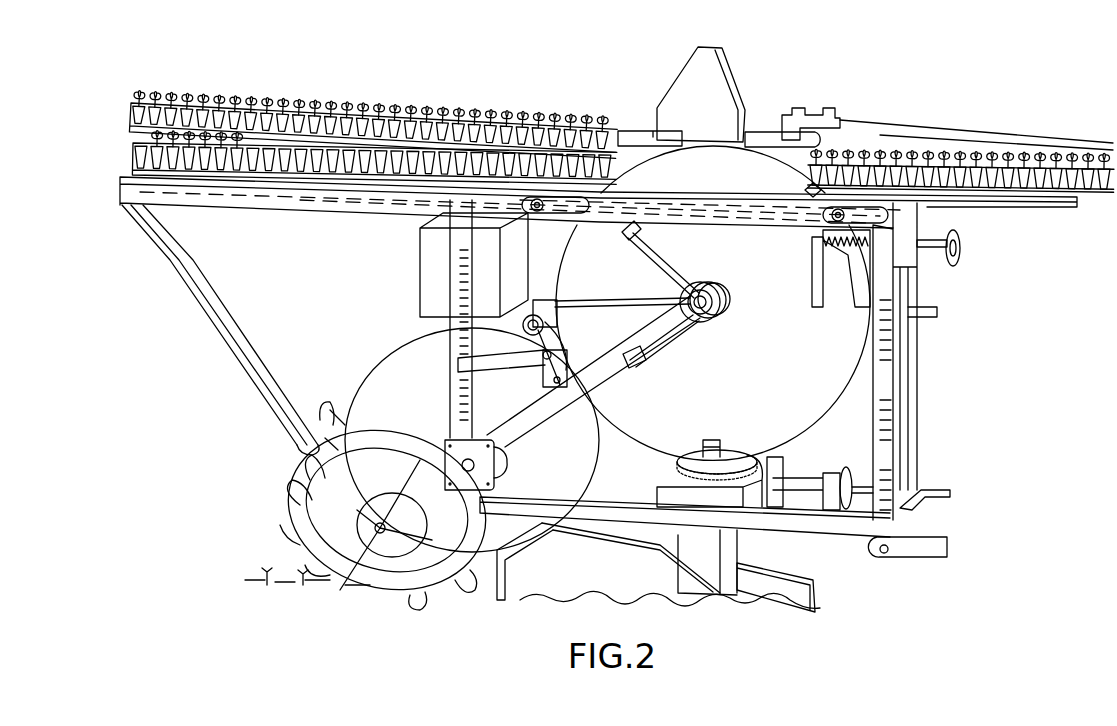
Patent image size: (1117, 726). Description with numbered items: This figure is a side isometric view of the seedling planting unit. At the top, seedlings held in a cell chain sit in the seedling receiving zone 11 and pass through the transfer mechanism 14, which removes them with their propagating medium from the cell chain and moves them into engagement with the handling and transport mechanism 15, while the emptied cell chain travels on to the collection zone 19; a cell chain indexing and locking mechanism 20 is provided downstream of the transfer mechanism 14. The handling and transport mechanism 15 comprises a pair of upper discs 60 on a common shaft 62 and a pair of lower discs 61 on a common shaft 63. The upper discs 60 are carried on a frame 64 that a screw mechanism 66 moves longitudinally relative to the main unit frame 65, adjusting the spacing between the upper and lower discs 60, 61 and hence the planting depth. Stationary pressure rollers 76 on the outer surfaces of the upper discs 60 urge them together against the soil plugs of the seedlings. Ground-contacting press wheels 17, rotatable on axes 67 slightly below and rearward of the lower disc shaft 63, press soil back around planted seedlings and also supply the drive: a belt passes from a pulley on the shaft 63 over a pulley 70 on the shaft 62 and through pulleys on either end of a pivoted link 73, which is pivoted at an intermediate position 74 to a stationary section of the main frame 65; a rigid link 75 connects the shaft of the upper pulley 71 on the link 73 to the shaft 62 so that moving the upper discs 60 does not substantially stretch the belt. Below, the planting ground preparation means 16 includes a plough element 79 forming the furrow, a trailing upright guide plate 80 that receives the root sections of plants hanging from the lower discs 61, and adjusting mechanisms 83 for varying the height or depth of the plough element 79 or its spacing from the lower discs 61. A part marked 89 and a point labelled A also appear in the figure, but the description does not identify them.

The seedling receiving zone 11 is at (265, 74).
The transfer mechanism 14 is at (818, 102).
The handling and transport mechanism 15 is at (461, 382).
The planting ground preparation means 16 is at (838, 601).
The press wheels 17 is at (371, 489).
The collection zone 19 is at (250, 176).
The cell chain indexing and locking mechanism 20 is at (665, 86).
The upper discs 60 is at (808, 384).
The lower discs 61 is at (447, 337).
The shaft 62 is at (717, 312).
The shaft 63 is at (493, 477).
The frame 64 is at (558, 204).
The main unit frame 65 is at (390, 203).
The screw mechanism 66 is at (960, 250).
The axes 67 is at (381, 523).
The pulley 70 is at (727, 296).
The upper pulley 71 is at (538, 300).
The pivoted link 73 is at (557, 332).
The intermediate pivot position 74 is at (543, 363).
The rigid link 75 is at (607, 312).
The stationary pressure rollers 76 is at (637, 237).
The plough element 79 is at (773, 583).
The guide plate 80 is at (655, 538).
The adjusting mechanisms 83 is at (808, 485).
The furrow opener block 89 is at (609, 574).
The pivot point A is at (817, 192).